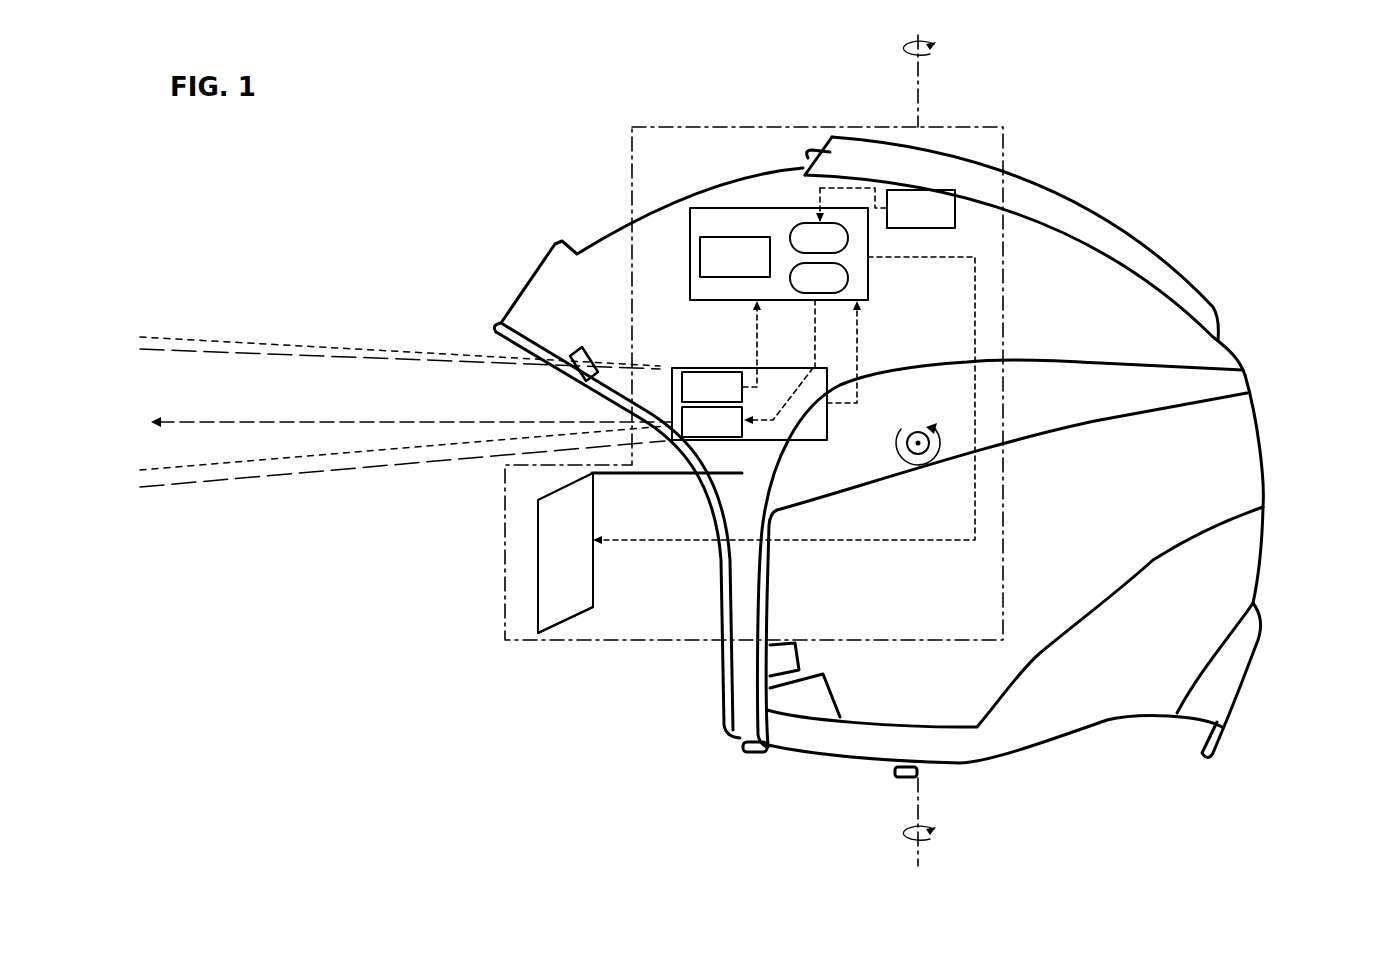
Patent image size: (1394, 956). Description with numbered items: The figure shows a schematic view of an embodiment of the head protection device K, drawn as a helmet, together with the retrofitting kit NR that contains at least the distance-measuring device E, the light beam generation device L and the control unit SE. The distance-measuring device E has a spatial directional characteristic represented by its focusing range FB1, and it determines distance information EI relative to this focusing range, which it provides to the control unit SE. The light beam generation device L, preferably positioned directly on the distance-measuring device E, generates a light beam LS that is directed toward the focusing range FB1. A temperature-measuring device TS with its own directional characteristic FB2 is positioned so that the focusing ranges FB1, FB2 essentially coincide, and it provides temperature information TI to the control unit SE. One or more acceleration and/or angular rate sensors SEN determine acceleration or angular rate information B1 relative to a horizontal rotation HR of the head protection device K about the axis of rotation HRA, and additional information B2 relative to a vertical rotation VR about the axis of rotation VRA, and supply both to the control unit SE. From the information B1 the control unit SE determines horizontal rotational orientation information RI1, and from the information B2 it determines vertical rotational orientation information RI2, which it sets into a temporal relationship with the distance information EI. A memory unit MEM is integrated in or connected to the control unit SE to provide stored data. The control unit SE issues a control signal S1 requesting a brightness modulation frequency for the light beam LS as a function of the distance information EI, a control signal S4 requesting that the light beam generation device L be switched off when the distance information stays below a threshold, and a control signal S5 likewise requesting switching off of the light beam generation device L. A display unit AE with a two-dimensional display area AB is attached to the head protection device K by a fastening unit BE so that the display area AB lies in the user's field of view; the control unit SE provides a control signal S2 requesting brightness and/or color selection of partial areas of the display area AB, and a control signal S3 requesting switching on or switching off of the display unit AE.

The head protection device K is at (1314, 193).
The axis of rotation of a horizontal rotation HRA is at (937, 48).
The horizontal rotation HR is at (920, 80).
The acceleration or angular rate information B1 is at (790, 181).
The additional acceleration or angular rate information B2 is at (818, 200).
The acceleration and/or angular rate sensor SEN is at (921, 209).
The control unit SE is at (754, 254).
The memory unit MEM is at (735, 257).
The horizontal rotational orientation information RI1 is at (819, 238).
The vertical rotational orientation information RI2 is at (819, 278).
The temperature information TI is at (757, 330).
The control signal S1 is at (796, 334).
The control signal S4 is at (815, 323).
The control signal S5 is at (815, 359).
The distance information EI is at (857, 323).
The distance-measuring device E is at (766, 406).
The temperature-measuring device TS is at (712, 387).
The light beam generation device L is at (712, 422).
The axis of rotation of a vertical rotation VRA is at (918, 430).
The vertical rotation VR is at (918, 466).
The control signal S2 is at (784, 421).
The control signal S3 is at (639, 541).
The fastening unit BE is at (648, 474).
The display area AB is at (557, 540).
The display unit AE is at (567, 622).
The retrofitting kit NR is at (503, 598).
The light beam LS is at (218, 420).
The focusing range FB1 is at (270, 347).
The spatial directional characteristic FB2 is at (190, 335).